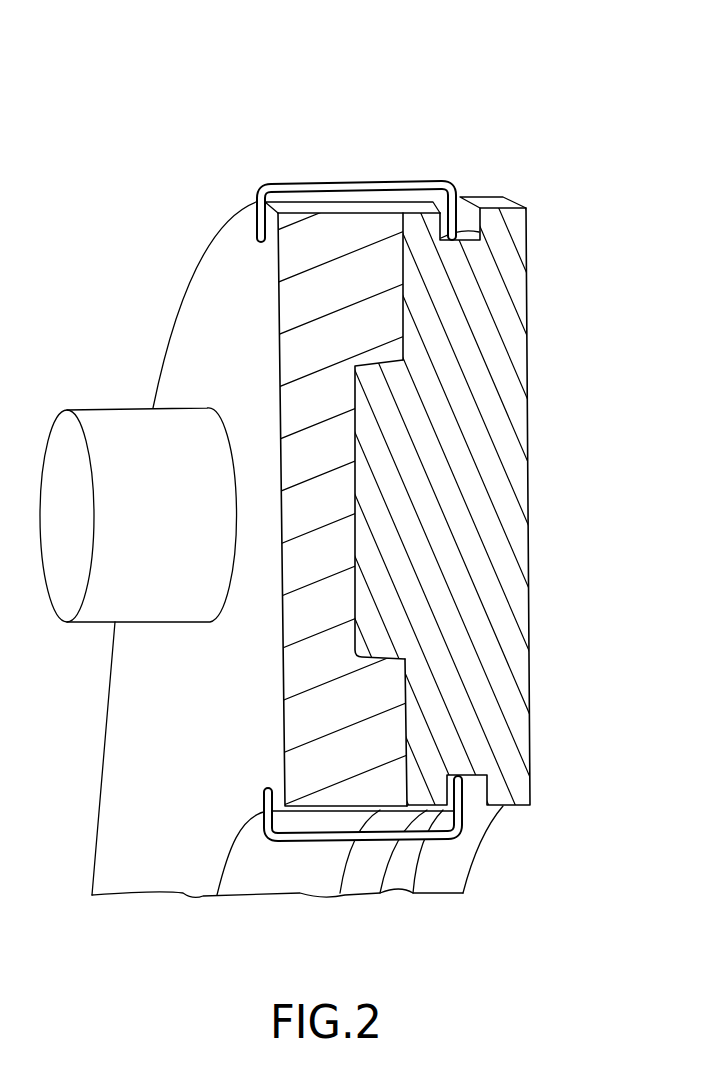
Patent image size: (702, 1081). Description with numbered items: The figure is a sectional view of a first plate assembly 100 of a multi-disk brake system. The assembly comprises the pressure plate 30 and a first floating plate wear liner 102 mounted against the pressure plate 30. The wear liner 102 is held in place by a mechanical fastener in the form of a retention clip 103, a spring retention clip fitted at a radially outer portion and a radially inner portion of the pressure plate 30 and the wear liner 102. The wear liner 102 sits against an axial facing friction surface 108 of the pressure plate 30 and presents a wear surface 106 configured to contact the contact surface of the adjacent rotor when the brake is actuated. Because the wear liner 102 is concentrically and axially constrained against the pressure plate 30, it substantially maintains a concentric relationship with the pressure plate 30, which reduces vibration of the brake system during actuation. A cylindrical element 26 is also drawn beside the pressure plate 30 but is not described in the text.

The first plate assembly 100 is at (106, 91).
The cylindrical member 26 is at (100, 409).
The pressure plate 30 is at (102, 768).
The first floating plate wear liner 102 is at (546, 527).
The retention clip 103 is at (380, 184).
The wear surface 106 is at (526, 330).
The axial facing friction surface 108 is at (353, 583).